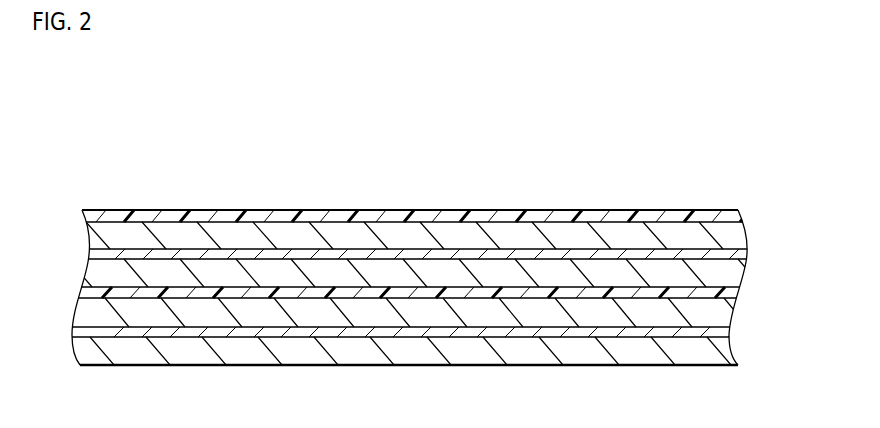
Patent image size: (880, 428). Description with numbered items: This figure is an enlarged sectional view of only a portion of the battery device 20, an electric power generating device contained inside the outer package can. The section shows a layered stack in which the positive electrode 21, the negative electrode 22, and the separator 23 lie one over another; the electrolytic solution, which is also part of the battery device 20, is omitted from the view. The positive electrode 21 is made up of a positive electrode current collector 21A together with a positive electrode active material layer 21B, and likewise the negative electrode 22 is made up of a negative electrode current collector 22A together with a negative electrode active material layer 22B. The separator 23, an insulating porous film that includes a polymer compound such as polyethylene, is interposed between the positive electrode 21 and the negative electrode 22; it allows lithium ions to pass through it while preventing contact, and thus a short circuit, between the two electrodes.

The battery device 20 is at (755, 127).
The positive electrode 21 is at (320, 122).
The positive electrode current collector 21A is at (133, 257).
The positive electrode active material layer 21B is at (248, 273).
The negative electrode 22 is at (622, 122).
The negative electrode current collector 22A is at (432, 330).
The negative electrode active material layer 22B is at (532, 350).
The separator 23 is at (708, 221).